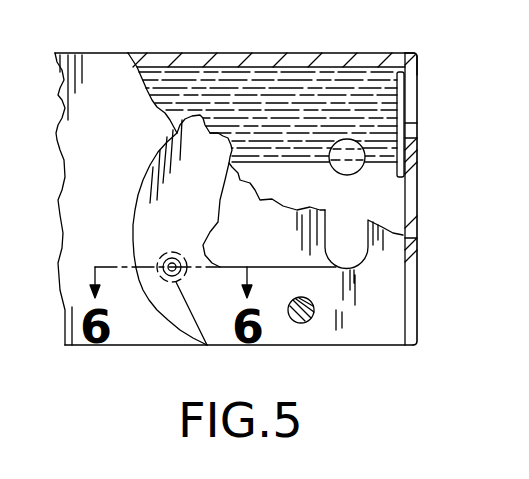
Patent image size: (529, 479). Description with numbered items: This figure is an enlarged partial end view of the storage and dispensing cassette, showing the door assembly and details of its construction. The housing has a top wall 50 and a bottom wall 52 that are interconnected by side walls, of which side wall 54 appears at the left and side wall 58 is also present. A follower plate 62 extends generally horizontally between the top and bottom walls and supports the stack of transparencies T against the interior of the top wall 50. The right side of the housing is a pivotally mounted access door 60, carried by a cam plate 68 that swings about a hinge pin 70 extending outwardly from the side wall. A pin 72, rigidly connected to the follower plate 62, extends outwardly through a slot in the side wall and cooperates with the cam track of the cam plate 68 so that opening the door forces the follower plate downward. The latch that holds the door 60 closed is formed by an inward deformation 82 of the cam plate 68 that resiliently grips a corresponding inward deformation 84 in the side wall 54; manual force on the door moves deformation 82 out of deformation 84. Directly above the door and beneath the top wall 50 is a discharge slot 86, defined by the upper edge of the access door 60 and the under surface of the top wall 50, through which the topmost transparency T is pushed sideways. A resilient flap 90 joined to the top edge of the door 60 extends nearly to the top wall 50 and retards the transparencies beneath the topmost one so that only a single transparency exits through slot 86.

The top wall 50 is at (218, 55).
The bottom wall 52 is at (140, 346).
The side wall 54 is at (87, 53).
The side wall 58 is at (382, 185).
The access door 60 is at (417, 262).
The follower plate 62 is at (299, 157).
The cam plate 68 is at (382, 313).
The pin 70 is at (311, 317).
The pin 72 is at (362, 146).
The inward deformation 82 is at (207, 346).
The inward deformation 84 is at (160, 253).
The slot 86 is at (427, 63).
The resilient flap 90 is at (417, 123).
The transparencies T is at (296, 101).